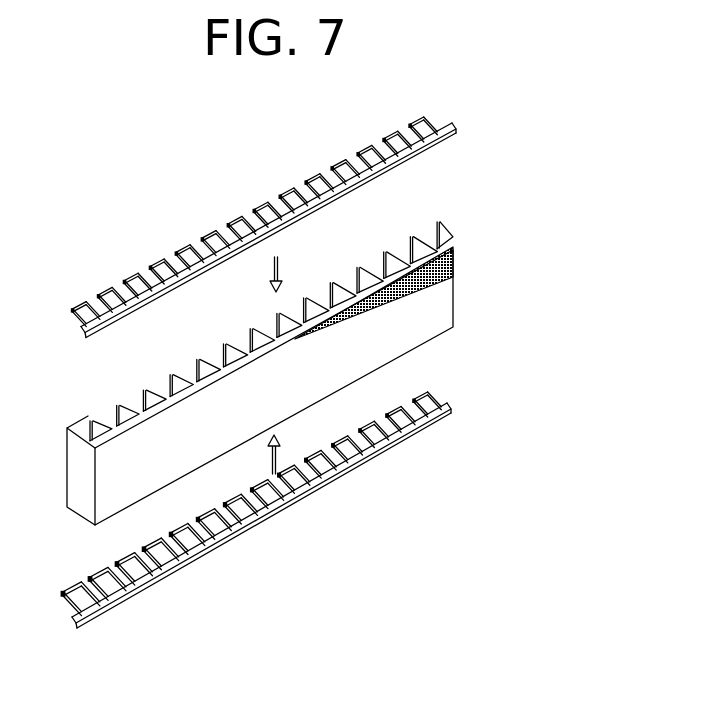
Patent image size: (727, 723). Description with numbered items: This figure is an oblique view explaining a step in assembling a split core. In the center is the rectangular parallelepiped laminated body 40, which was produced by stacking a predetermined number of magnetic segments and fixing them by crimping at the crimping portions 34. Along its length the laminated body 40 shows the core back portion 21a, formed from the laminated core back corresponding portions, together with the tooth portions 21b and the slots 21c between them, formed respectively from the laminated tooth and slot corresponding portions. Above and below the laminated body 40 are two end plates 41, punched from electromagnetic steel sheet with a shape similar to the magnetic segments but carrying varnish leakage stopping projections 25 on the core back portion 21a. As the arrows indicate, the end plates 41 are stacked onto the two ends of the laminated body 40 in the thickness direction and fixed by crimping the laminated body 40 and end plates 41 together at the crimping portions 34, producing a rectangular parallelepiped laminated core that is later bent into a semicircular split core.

The laminated body 40 is at (455, 275).
The end plates 41 is at (316, 358).
The crimping portions 34 is at (172, 290).
The varnish leakage stopping projections 25 is at (338, 200).
The core back portion 21a is at (444, 138).
The tooth portions 21b is at (319, 181).
The slots 21c is at (243, 217).